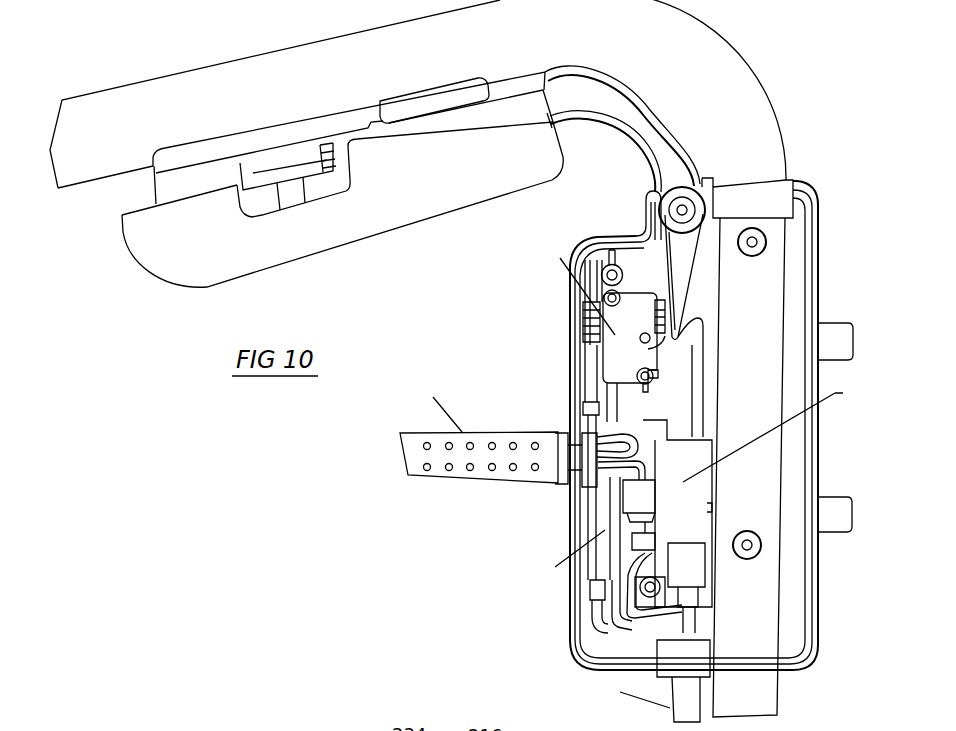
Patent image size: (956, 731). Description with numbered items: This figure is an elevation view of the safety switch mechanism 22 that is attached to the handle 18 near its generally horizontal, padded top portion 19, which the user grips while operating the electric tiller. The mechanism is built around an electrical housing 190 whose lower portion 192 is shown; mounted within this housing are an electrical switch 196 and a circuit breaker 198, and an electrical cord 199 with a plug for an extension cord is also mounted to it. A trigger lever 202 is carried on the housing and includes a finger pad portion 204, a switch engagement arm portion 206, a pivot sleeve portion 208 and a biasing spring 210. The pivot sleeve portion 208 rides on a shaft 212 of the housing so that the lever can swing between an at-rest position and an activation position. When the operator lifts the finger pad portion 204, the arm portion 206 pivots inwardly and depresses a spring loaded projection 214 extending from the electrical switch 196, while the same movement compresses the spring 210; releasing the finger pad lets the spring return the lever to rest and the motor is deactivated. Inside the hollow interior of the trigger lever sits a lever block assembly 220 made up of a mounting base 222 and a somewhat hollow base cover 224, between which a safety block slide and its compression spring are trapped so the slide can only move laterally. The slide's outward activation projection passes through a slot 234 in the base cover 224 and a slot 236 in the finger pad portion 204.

The handle 18 is at (760, 487).
The top portion 19 is at (310, 60).
The safety switch mechanism 22 is at (488, 258).
The electrical housing 190 is at (812, 606).
The lower portion 192 is at (566, 517).
The electrical switch 196 is at (642, 350).
The circuit breaker 198 is at (685, 457).
The electrical cord 199 is at (500, 447).
The trigger lever 202 is at (353, 248).
The finger pad portion 204 is at (278, 248).
The switch engagement arm portion 206 is at (682, 277).
The pivot sleeve portion 208 is at (650, 200).
The biasing spring 210 is at (690, 347).
The shaft 212 is at (692, 205).
The spring loaded projection 214 is at (660, 303).
The lever block assembly 220 is at (153, 192).
The mounting base 222 is at (372, 110).
The base cover 224 is at (207, 177).
The slot 234 is at (320, 140).
The slot 236 is at (303, 190).